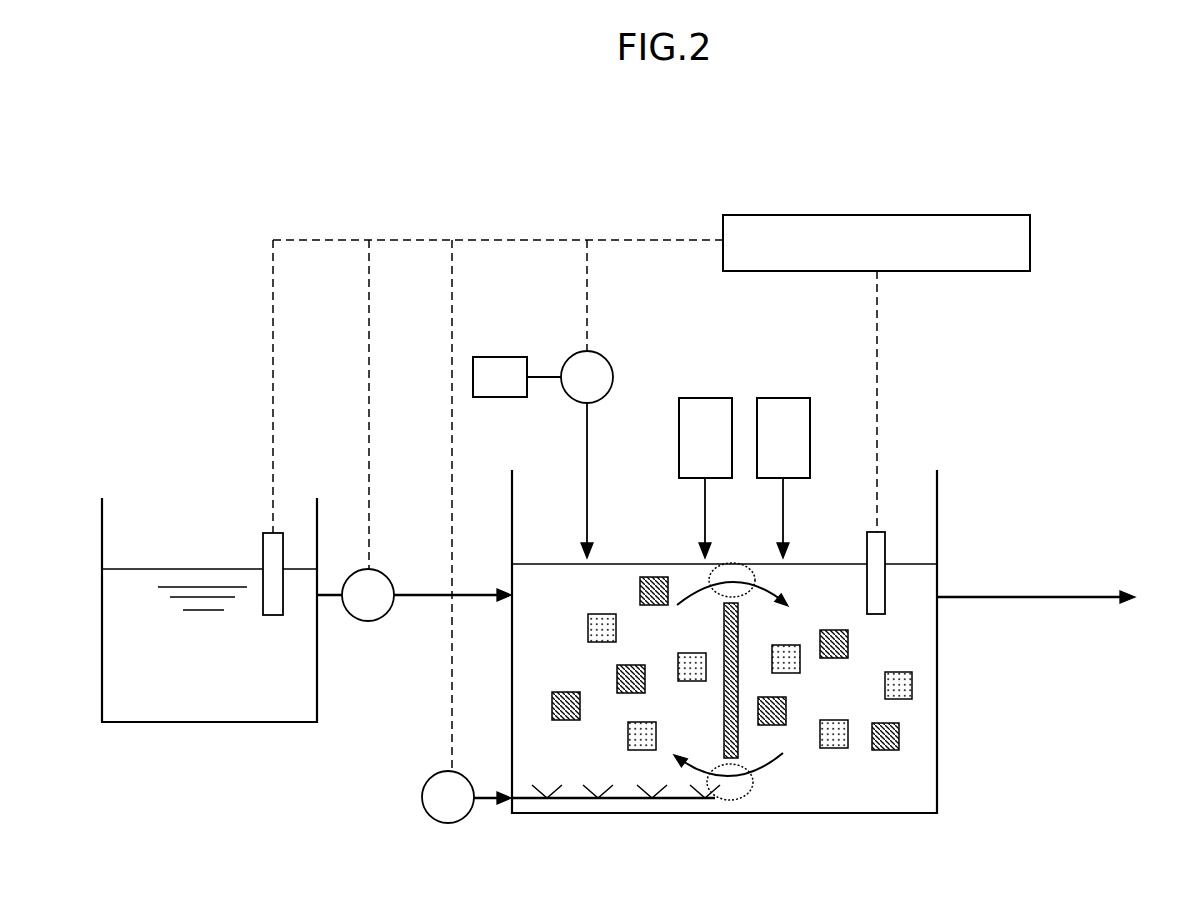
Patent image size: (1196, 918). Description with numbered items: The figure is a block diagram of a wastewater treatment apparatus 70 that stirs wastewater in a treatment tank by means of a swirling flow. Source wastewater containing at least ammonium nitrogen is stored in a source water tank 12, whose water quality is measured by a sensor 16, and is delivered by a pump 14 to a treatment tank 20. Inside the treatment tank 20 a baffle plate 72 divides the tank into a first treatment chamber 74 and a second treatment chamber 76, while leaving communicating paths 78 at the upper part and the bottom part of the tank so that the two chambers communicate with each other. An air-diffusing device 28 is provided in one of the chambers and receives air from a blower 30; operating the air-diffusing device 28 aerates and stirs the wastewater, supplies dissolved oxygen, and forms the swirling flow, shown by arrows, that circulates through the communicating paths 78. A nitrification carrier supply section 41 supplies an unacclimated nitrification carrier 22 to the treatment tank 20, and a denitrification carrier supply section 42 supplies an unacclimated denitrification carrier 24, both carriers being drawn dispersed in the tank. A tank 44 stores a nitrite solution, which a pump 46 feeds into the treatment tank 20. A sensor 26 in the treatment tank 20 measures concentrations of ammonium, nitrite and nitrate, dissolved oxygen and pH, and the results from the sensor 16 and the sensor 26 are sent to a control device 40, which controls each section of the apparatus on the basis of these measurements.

The wastewater treatment apparatus 70 is at (1141, 213).
The control device 40 is at (874, 213).
The source water tank 12 is at (207, 722).
The sensor 16 is at (263, 545).
The pump 14 is at (370, 621).
The treatment tank 20 is at (530, 813).
The first treatment chamber 74 is at (546, 570).
The tank 44 is at (499, 363).
The pump 46 is at (600, 362).
The nitrification carrier supply section 41 is at (706, 397).
The denitrification carrier supply section 42 is at (782, 397).
The sensor 26 is at (888, 532).
The second treatment chamber 76 is at (932, 578).
The blower 30 is at (448, 823).
The air-diffusing device 28 is at (608, 800).
The baffle plate 72 is at (738, 734).
The communicating path 78 is at (758, 565).
The nitrification carrier 22 is at (890, 735).
The denitrification carrier 24 is at (912, 683).